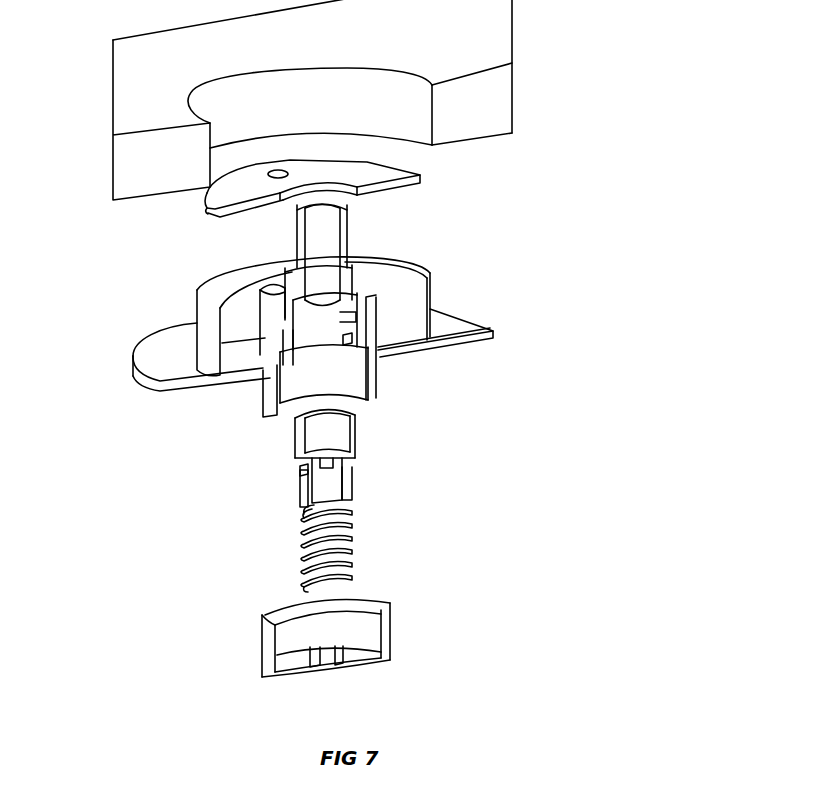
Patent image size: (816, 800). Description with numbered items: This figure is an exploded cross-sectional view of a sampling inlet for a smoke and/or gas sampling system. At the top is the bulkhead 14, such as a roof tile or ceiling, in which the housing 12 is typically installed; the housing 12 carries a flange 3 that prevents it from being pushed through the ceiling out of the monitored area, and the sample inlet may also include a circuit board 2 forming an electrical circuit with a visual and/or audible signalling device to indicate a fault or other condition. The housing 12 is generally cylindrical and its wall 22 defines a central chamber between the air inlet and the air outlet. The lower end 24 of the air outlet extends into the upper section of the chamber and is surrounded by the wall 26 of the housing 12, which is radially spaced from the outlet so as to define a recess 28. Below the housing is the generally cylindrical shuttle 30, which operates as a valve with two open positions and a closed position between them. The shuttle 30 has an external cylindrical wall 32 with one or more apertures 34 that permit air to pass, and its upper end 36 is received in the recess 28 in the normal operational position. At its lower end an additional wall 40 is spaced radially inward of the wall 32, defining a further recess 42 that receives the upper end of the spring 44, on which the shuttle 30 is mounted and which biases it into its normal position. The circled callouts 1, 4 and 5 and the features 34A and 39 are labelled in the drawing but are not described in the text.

The housing block callout 1 is at (153, 102).
The circuit board 2 is at (205, 216).
The flange 3 is at (130, 345).
The piston callout 4 is at (295, 455).
The spring callout 5 is at (305, 532).
The housing 12 is at (513, 298).
The bulkhead 14 is at (480, 75).
The wall 22 is at (370, 378).
The lower end of air outlet 24 is at (342, 303).
The wall 26 is at (290, 283).
The recess 28 is at (307, 307).
The shuttle 30 is at (368, 461).
The external cylindrical wall 32 is at (296, 463).
The apertures 34 is at (300, 473).
The latch tab 34A is at (350, 338).
The upper end of shuttle 36 is at (357, 430).
The tab 39 is at (355, 319).
The additional wall 40 is at (343, 497).
The further recess 42 is at (308, 497).
The spring 44 is at (355, 585).